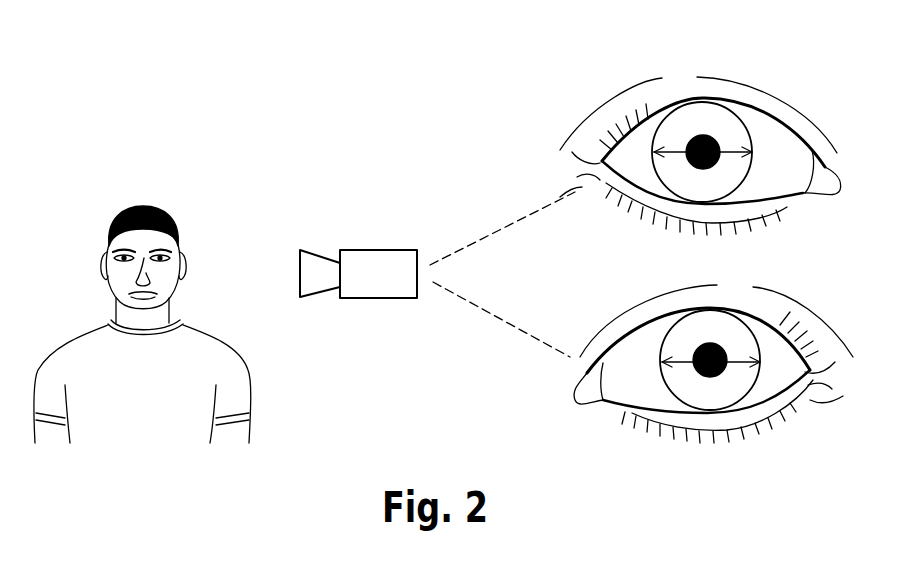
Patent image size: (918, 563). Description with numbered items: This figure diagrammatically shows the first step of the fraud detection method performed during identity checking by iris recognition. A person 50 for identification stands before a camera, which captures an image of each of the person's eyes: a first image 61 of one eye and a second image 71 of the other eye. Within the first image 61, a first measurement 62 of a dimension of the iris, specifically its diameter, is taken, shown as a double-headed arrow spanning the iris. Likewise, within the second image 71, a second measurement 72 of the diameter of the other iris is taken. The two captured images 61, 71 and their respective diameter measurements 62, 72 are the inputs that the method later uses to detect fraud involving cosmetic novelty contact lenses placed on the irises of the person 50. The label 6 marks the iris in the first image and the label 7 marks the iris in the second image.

The person 50 is at (108, 192).
The first image 61 is at (684, 90).
The first iris 6 is at (720, 118).
The first measurement 62 is at (727, 147).
The second image 71 is at (770, 300).
The second iris 7 is at (685, 338).
The second measurement 72 is at (685, 358).